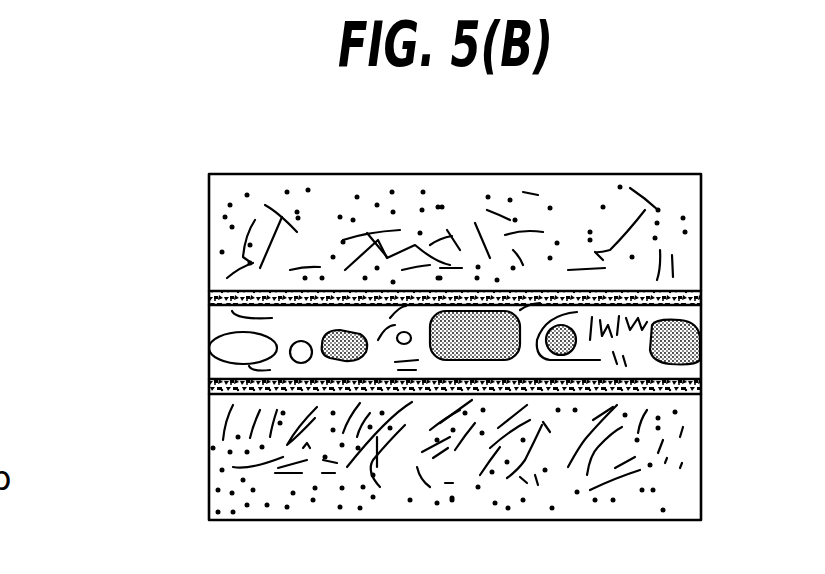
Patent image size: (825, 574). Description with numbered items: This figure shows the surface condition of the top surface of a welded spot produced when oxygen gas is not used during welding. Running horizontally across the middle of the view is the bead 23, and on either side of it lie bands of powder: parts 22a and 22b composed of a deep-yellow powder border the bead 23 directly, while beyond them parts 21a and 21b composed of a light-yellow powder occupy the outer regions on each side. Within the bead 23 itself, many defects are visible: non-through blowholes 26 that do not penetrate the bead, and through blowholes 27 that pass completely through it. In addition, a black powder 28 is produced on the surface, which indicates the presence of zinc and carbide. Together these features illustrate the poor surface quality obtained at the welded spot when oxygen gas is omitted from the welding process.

The light-yellow powder part 21a is at (700, 223).
The light-yellow powder part 21b is at (685, 503).
The deep-yellow powder part 22a is at (683, 300).
The deep-yellow powder part 22b is at (685, 390).
The bead 23 is at (685, 372).
The non-through blowhole 26 is at (533, 290).
The through blowhole 27 is at (248, 347).
The black powder 28 is at (443, 236).